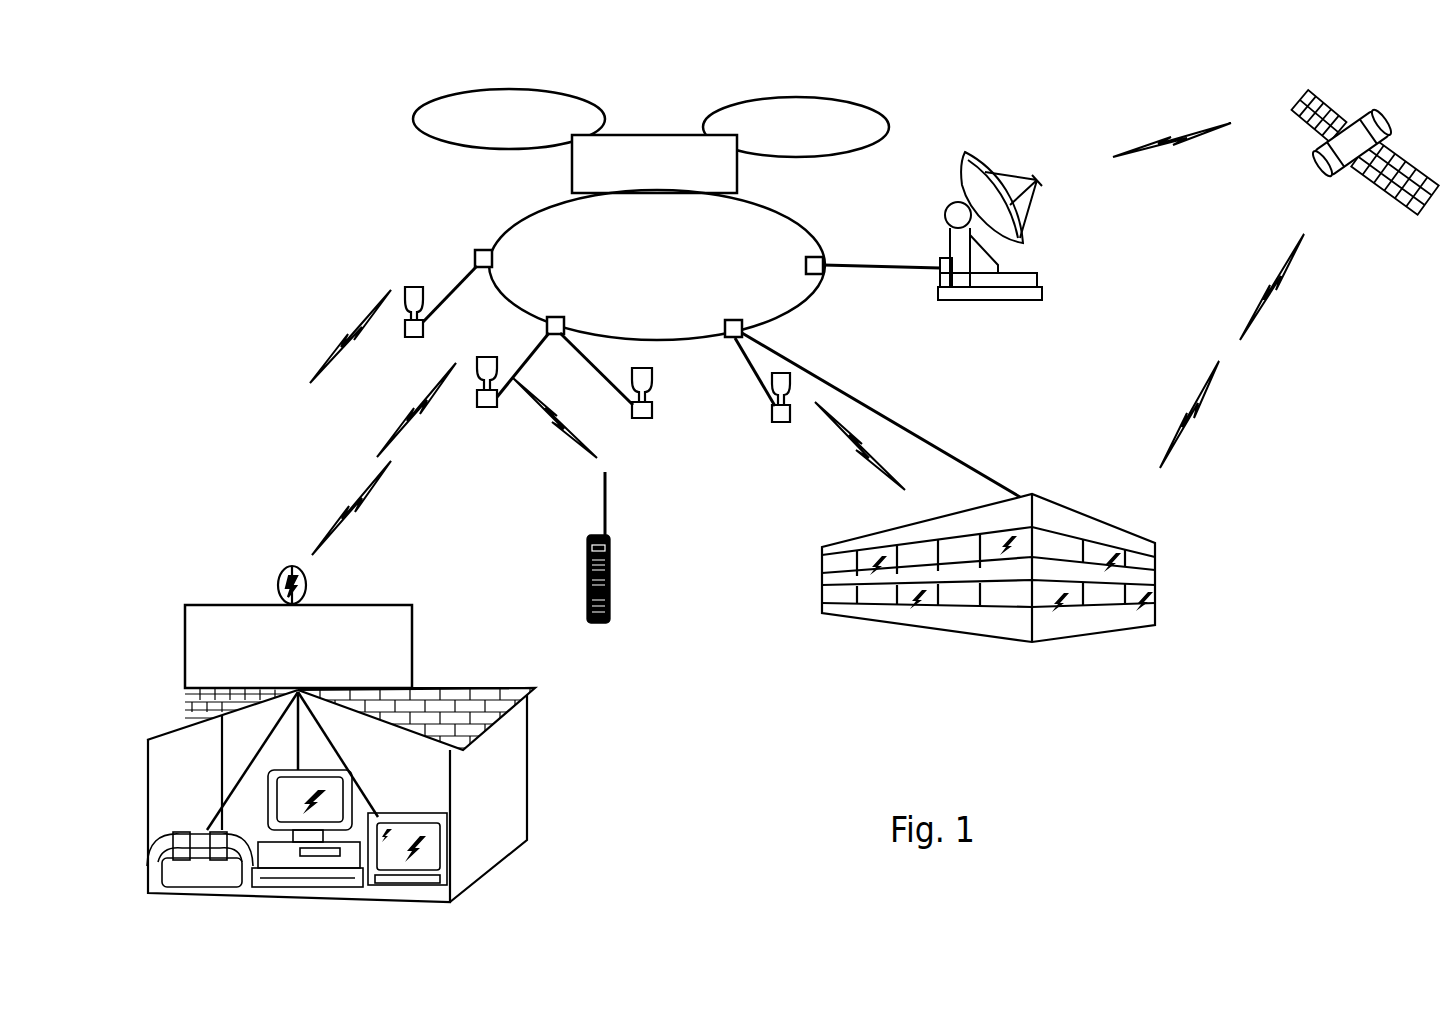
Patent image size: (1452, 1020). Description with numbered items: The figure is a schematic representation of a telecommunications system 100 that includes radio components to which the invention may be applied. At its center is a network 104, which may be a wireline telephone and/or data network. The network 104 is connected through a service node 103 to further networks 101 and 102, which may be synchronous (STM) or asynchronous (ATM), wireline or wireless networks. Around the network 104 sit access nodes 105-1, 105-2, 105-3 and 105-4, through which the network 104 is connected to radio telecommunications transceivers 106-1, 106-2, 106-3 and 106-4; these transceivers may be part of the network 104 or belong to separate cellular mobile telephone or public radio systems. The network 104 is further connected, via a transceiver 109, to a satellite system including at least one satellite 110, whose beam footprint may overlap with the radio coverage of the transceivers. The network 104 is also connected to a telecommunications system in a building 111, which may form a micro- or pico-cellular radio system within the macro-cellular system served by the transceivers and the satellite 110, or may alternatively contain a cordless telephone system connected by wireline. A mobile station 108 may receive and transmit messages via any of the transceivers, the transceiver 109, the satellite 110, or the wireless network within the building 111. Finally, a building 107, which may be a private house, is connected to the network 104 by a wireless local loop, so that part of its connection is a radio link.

The telecommunications system 100 is at (243, 293).
The further network 101 is at (564, 93).
The further network 102 is at (851, 104).
The service node 103 is at (645, 135).
The network 104 is at (775, 208).
The access node 105-1 is at (477, 252).
The access node 105-2 is at (582, 313).
The access node 105-3 is at (707, 315).
The access node 105-4 is at (822, 271).
The radio telecommunications transceiver 106-1 is at (429, 318).
The radio telecommunications transceiver 106-2 is at (502, 385).
The radio telecommunications transceiver 106-3 is at (612, 391).
The radio telecommunications transceiver 106-4 is at (770, 394).
The building 107 is at (413, 618).
The mobile station 108 is at (611, 616).
The transceiver 109 is at (1047, 287).
The satellite 110 is at (1320, 168).
The building 111 is at (1157, 578).